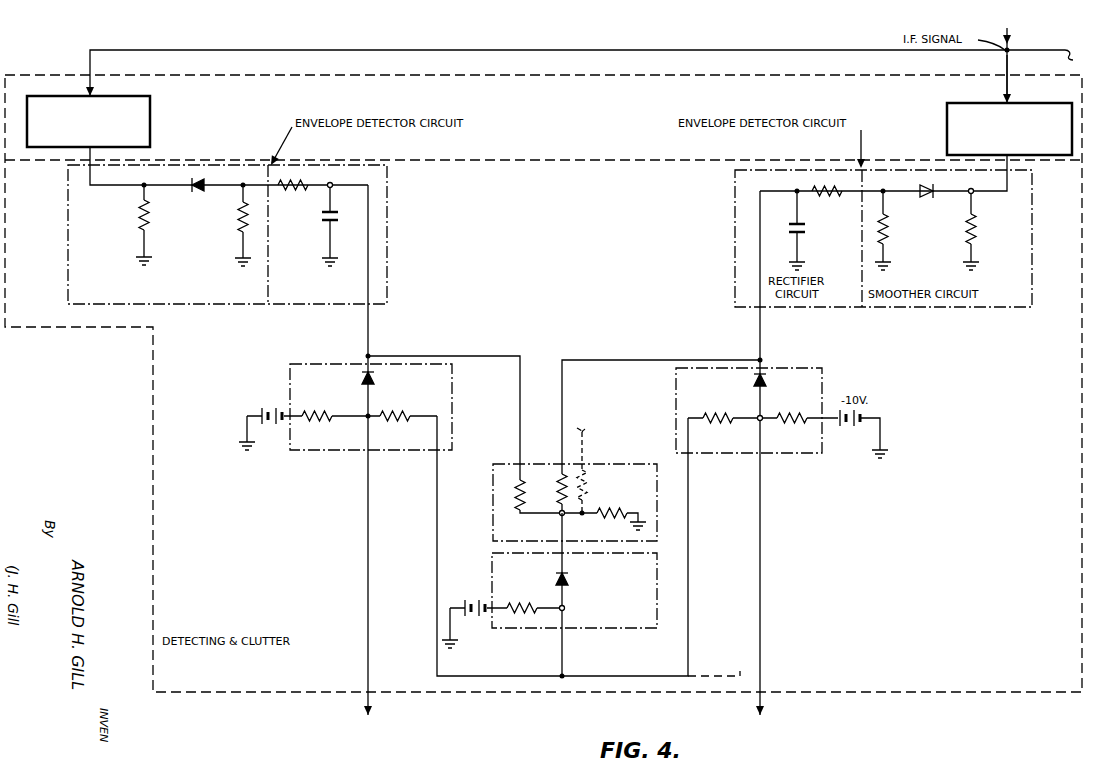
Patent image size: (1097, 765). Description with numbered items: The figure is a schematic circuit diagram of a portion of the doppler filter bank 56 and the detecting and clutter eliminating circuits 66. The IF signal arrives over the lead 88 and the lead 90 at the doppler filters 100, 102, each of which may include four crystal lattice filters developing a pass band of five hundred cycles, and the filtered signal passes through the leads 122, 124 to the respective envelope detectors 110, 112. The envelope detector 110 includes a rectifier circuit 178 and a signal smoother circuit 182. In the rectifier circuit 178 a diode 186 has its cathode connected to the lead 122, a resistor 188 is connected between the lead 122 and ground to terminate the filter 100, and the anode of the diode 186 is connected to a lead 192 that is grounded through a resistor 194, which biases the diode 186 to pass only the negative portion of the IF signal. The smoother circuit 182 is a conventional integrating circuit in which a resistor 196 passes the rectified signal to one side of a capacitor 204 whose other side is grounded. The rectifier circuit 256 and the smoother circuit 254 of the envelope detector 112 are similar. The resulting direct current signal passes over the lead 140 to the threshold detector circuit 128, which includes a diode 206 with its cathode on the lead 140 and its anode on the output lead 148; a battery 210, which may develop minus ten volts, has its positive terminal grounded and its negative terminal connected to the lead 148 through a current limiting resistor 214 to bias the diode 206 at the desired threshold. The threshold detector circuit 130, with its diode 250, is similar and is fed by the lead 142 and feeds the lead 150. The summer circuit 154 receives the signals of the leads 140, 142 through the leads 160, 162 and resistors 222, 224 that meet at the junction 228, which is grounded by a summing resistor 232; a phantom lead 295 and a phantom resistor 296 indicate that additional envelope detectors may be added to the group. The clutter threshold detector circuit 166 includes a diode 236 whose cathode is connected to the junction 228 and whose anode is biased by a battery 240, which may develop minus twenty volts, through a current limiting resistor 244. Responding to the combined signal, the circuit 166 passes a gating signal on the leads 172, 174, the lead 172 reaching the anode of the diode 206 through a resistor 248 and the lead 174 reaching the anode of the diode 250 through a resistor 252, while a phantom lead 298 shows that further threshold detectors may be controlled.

The doppler filter bank 56 is at (543, 383).
The detecting and clutter eliminating circuit 66 is at (237, 659).
The lead 88 is at (262, 50).
The I.F. signal input line 90 is at (1010, 84).
The doppler filter 100 is at (148, 107).
The doppler filter 102 is at (948, 119).
The envelope detector 110 is at (385, 165).
The envelope detector 112 is at (810, 166).
The lead 122 is at (88, 185).
The lead 124 is at (1010, 160).
The rectifier circuit 178 is at (138, 293).
The signal smoother circuit 182 is at (313, 287).
The diode 186 is at (196, 193).
The resistor 188 is at (138, 218).
The lead 192 is at (215, 185).
The resistor 194 is at (240, 222).
The resistor 196 is at (307, 185).
The capacitor 204 is at (322, 216).
The lead 140 is at (368, 258).
The lead 142 is at (758, 346).
The output lead 148 is at (368, 480).
The lead 150 is at (760, 627).
The lead 160 is at (508, 356).
The lead 162 is at (628, 360).
The threshold detector circuit 128 is at (454, 405).
The threshold detector circuit 130 is at (800, 368).
The diode 206 is at (374, 379).
The battery 210 is at (262, 420).
The current limiting resistor 214 is at (322, 418).
The resistor 248 is at (405, 412).
The diode 250 is at (766, 379).
The resistor 252 is at (723, 424).
The smoother circuit 254 is at (983, 307).
The rectifier circuit 256 is at (830, 307).
The summer circuit 154 is at (575, 502).
The resistor 222 is at (519, 474).
The resistor 224 is at (559, 485).
The junction 228 is at (560, 516).
The summing resistor 232 is at (599, 516).
The phantom lead 295 is at (590, 442).
The resistor 296 is at (587, 470).
The clutter threshold detector circuit 166 is at (574, 590).
The diode 236 is at (556, 580).
The battery 240 is at (462, 613).
The current limiting resistor 244 is at (528, 604).
The lead 172 is at (437, 628).
The lead 174 is at (688, 617).
The phantom lead 298 is at (713, 676).